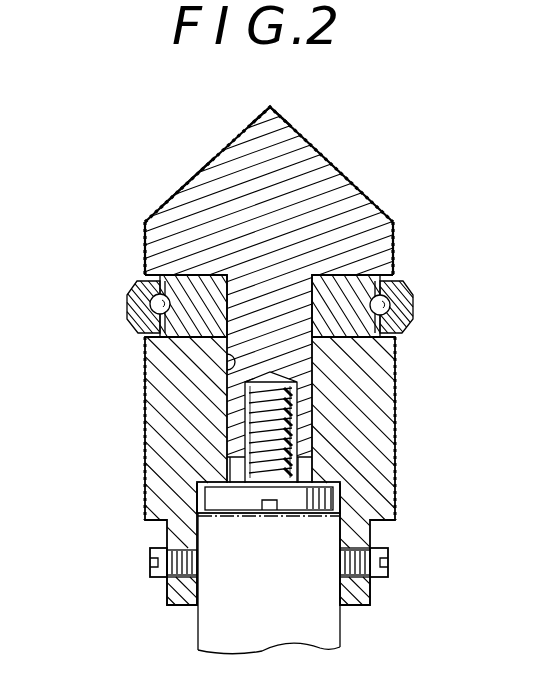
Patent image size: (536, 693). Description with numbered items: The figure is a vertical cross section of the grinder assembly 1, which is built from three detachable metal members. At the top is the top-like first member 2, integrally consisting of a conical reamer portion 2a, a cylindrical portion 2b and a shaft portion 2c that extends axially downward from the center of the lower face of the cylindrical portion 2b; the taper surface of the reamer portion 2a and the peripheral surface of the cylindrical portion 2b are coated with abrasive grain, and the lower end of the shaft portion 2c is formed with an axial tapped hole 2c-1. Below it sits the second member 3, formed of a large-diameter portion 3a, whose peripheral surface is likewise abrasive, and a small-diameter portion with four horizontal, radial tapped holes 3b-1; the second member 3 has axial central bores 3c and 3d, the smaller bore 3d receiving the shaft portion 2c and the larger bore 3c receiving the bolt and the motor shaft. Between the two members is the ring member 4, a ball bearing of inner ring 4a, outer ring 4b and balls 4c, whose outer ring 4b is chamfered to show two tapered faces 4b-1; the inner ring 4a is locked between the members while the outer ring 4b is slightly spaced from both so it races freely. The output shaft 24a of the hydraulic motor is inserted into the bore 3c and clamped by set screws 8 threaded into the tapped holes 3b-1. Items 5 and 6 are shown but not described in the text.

The grinder assembly 1 is at (330, 150).
The first member 2 is at (322, 284).
The conical reamer portion 2a is at (346, 188).
The cylindrical portion 2b is at (378, 262).
The shaft portion 2c is at (300, 358).
The axial tapped hole 2c-1 is at (364, 432).
The second member 3 is at (259, 501).
The large-diameter portion 3a is at (155, 433).
The tapped holes 3b-1 is at (185, 600).
The central bore 3c is at (340, 604).
The central bore 3d is at (158, 382).
The ring member 4 is at (250, 306).
The inner ring 4a is at (130, 335).
The outer ring 4b is at (135, 287).
The tapered faces 4b-1 is at (418, 312).
The balls 4c is at (150, 305).
The serrations 5 is at (197, 181).
The flange 6 is at (397, 500).
The set screws 8 is at (150, 552).
The output shaft 24a is at (346, 652).